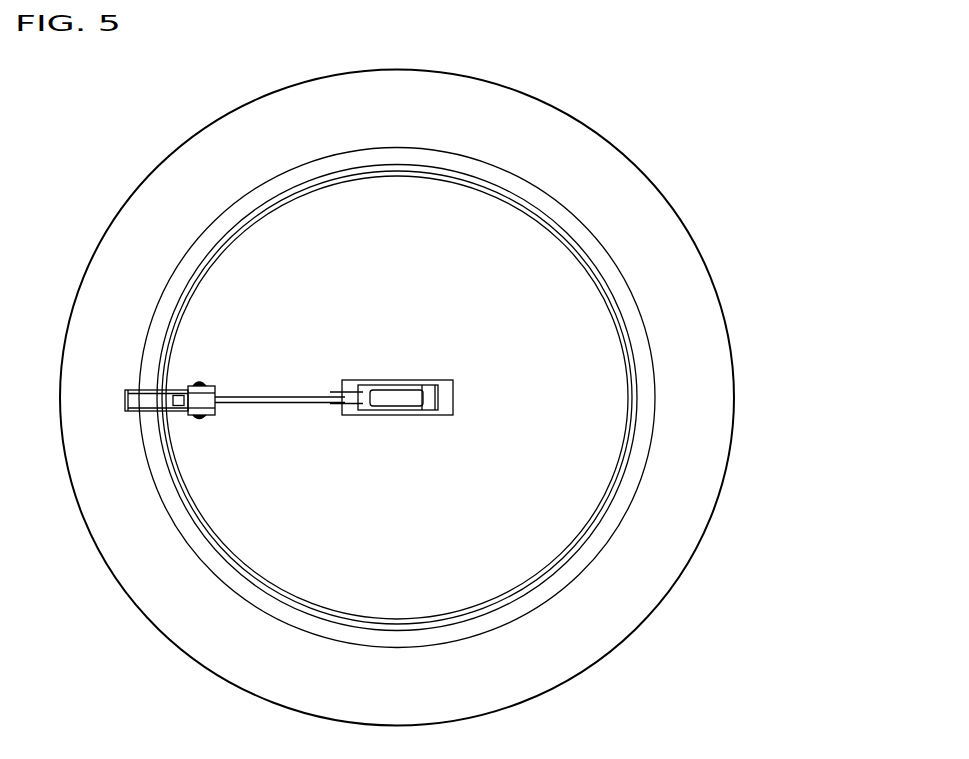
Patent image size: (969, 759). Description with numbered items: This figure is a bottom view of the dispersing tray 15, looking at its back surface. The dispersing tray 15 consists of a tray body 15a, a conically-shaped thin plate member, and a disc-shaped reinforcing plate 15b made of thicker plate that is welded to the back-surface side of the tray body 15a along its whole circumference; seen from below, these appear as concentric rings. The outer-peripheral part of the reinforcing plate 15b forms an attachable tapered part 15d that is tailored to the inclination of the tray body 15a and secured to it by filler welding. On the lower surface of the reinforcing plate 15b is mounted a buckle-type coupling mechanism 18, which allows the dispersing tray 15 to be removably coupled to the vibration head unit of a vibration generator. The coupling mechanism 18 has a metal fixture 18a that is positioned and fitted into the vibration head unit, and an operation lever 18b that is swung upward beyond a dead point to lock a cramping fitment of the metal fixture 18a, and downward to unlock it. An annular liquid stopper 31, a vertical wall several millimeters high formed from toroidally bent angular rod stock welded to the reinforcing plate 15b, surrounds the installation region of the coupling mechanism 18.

The dispersing tray 15 is at (397, 398).
The tray body 15a is at (138, 188).
The reinforcing plate 15b is at (209, 225).
The attachable tapered part 15d is at (172, 293).
The liquid stopper 31 is at (342, 178).
The buckle-type coupling mechanism 18 is at (274, 436).
The metal fixture 18a is at (408, 415).
The operation lever 18b is at (133, 389).